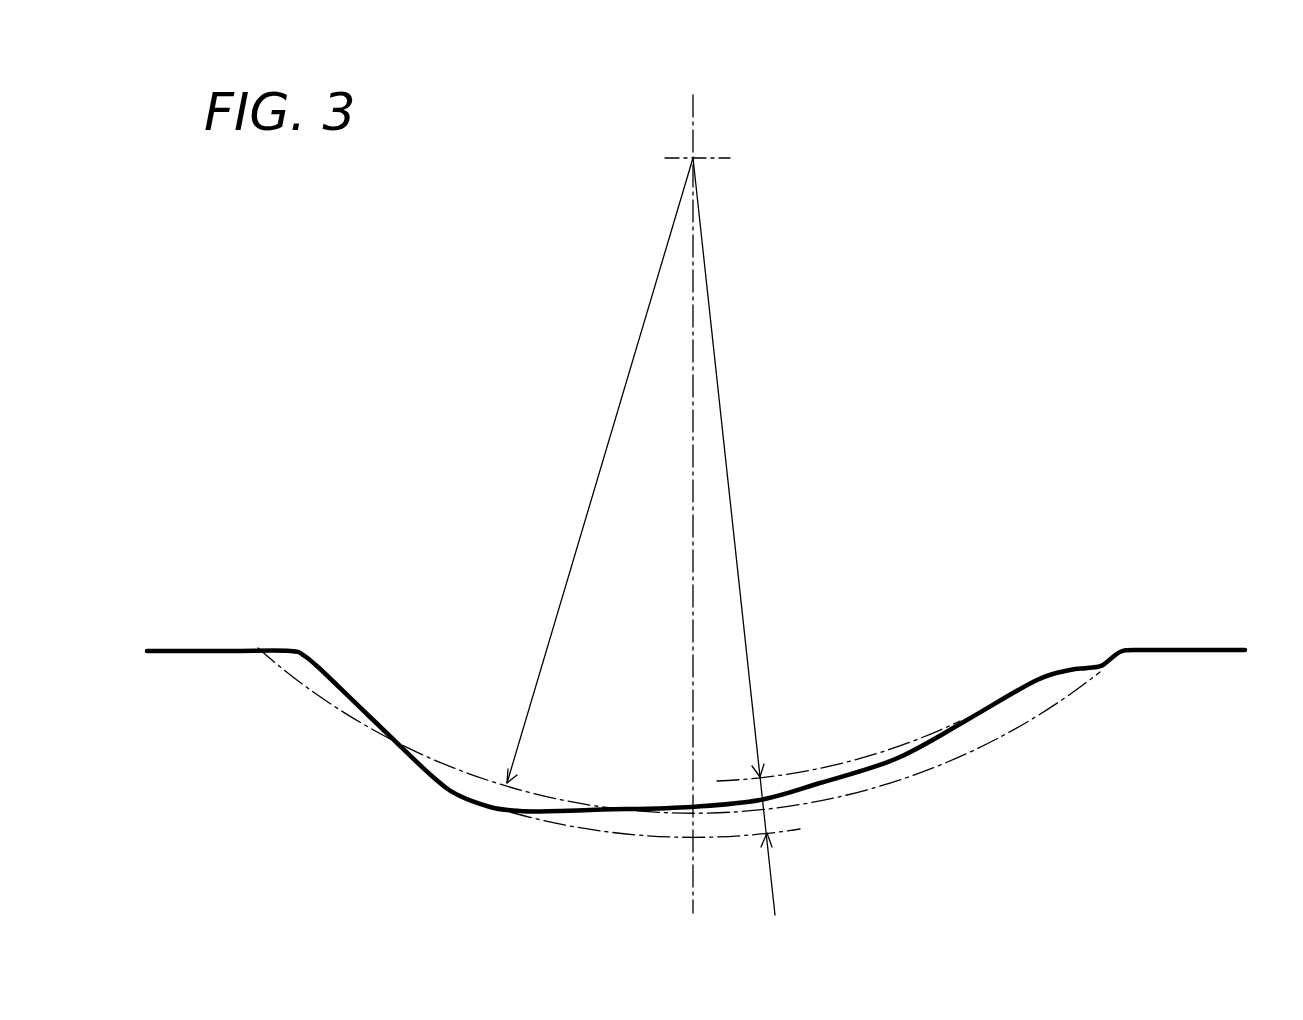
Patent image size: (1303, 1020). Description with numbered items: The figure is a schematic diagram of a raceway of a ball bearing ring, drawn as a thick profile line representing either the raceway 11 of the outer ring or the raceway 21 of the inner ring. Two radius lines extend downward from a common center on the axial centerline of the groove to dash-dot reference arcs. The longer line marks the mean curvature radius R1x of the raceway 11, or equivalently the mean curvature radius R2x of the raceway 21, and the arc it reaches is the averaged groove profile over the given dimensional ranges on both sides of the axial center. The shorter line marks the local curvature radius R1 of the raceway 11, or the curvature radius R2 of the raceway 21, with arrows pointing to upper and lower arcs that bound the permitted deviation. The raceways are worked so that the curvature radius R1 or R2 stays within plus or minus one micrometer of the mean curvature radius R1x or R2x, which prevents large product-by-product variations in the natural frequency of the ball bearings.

The raceway of the outer ring 11 is at (696, 656).
The raceway of the inner ring 21 is at (1037, 683).
The curvature radius of the raceway of the outer ring R1 is at (735, 536).
The curvature radius of the raceway of the inner ring R2 is at (655, 623).
The mean curvature radius of the raceway of the outer ring R1x is at (679, 485).
The mean curvature radius of the raceway of the inner ring R2x is at (679, 590).